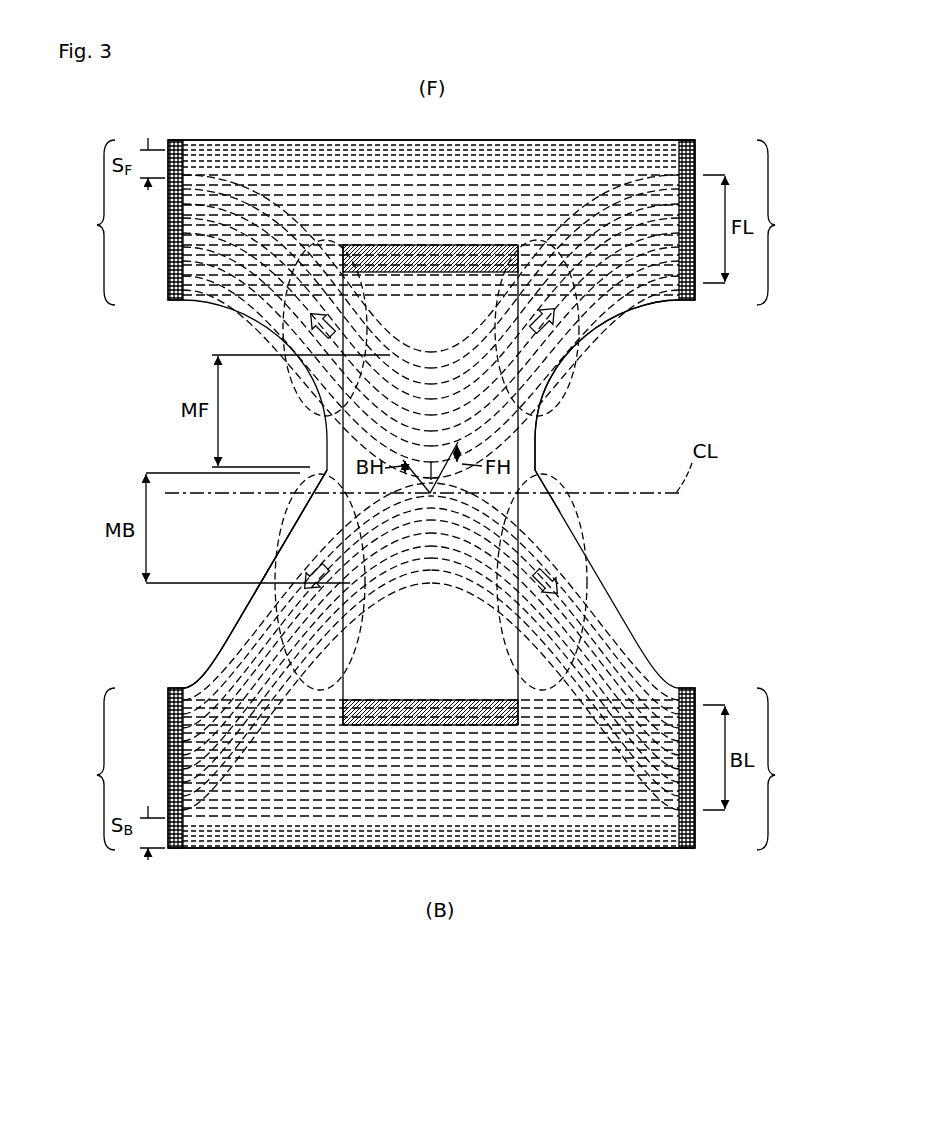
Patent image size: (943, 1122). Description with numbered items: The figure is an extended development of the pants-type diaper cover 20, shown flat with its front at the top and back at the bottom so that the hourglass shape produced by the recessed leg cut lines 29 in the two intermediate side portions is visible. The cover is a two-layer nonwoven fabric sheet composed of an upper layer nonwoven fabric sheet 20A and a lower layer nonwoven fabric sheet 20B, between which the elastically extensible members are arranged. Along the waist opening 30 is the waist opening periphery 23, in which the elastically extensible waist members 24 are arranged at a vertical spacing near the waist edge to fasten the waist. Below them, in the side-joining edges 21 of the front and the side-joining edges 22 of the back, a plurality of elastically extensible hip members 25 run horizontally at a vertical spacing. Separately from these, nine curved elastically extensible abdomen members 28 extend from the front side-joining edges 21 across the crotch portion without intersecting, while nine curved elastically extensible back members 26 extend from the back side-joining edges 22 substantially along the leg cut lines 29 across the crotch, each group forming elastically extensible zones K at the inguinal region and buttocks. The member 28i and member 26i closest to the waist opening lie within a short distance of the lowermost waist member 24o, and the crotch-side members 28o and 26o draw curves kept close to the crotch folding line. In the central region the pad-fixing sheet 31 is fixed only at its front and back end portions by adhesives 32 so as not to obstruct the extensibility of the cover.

The diaper cover 20 is at (621, 138).
The upper layer nonwoven fabric sheet 20A is at (225, 643).
The lower layer nonwoven fabric sheet 20B is at (255, 579).
The side-joining edges of the front 21 is at (433, 222).
The side-joining edges of the back 22 is at (435, 769).
The waist opening periphery 23 is at (700, 141).
The elastically extensible waist members 24 is at (246, 150).
The lowermost elastically extensible waist member 24o is at (333, 165).
The elastically extensible hip members 25 is at (488, 215).
The curved elastically extensible back members 26 is at (630, 646).
The elastically extensible back member closest to the waist opening 26i is at (431, 596).
The elastically extensible back member closest to the crotch side 26o is at (335, 472).
The curved elastically extensible abdomen members 28 is at (262, 304).
The elastically extensible abdomen member closest to the waist opening 28i is at (418, 352).
The elastically extensible abdomen member closest to the crotch side 28o is at (362, 447).
The leg cut lines 29 is at (622, 312).
The waist opening 30 is at (553, 140).
The pad-fixing sheet 31 is at (540, 453).
The adhesives 32 is at (466, 274).
The elastically extensible zones K is at (297, 380).